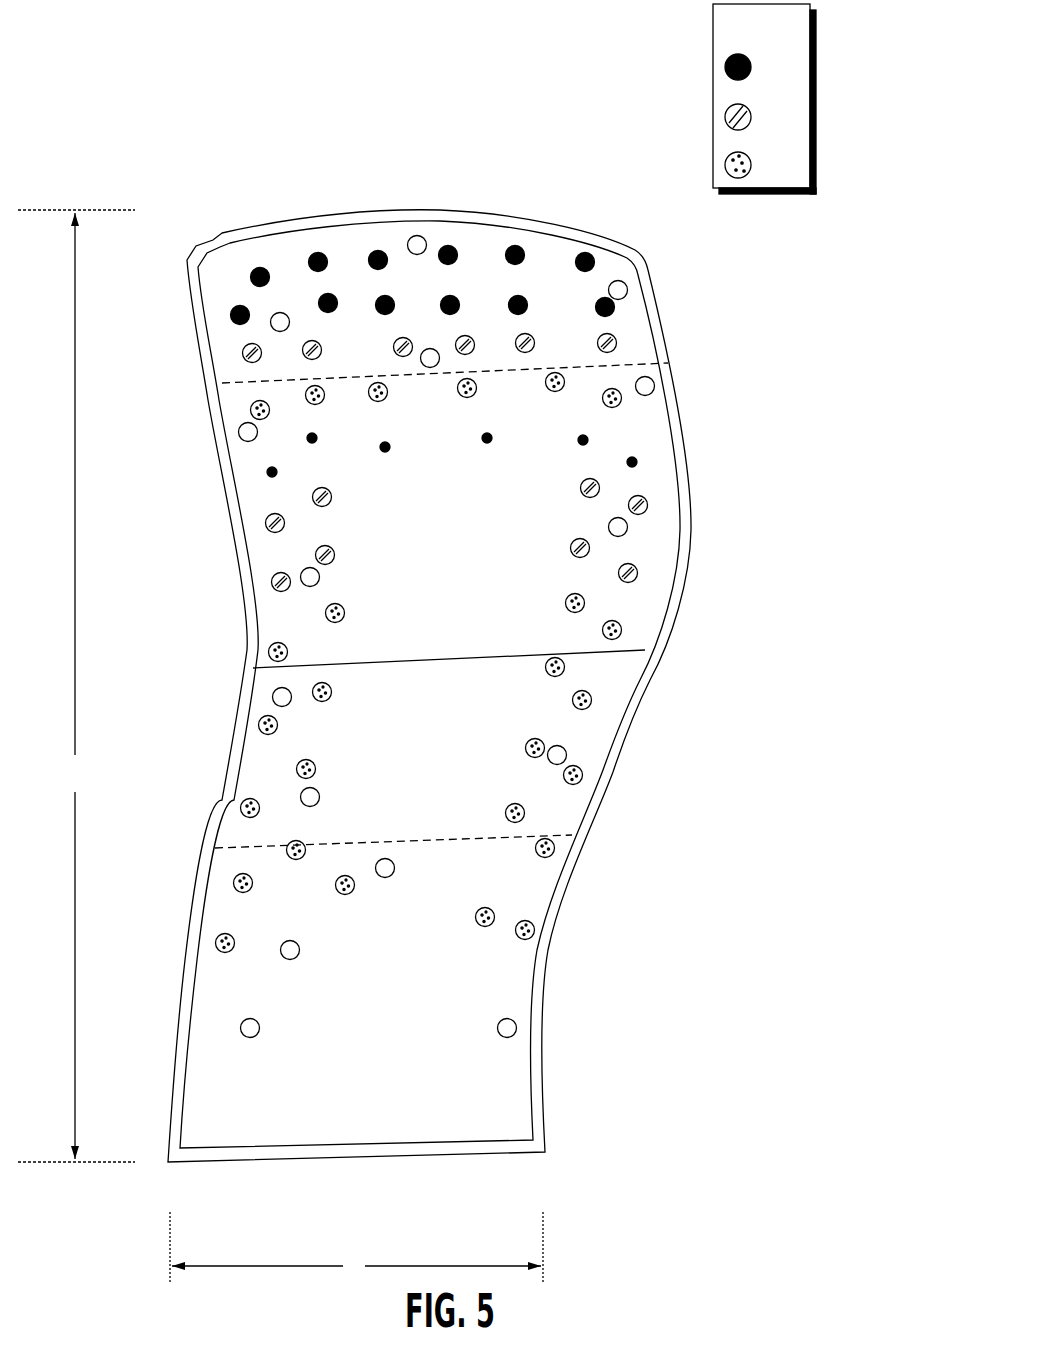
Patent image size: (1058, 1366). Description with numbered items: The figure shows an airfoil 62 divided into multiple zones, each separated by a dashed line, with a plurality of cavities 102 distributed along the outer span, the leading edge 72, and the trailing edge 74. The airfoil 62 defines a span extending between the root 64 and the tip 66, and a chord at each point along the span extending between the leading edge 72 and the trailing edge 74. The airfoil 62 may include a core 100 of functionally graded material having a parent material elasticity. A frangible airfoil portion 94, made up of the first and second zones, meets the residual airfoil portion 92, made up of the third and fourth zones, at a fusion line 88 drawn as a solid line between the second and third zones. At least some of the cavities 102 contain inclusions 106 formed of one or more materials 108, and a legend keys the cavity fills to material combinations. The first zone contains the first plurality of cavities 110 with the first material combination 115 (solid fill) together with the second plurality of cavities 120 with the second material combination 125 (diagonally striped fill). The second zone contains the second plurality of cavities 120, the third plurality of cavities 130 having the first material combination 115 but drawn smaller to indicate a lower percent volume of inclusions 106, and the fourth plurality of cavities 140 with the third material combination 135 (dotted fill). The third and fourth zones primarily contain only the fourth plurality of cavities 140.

The airfoil 62 is at (172, 208).
The root 64 is at (403, 1180).
The tip 66 is at (372, 168).
The leading edge 72 is at (214, 595).
The trailing edge 74 is at (708, 596).
The fusion line 88 is at (585, 663).
The residual airfoil portion 92 is at (434, 767).
The frangible airfoil portion 94 is at (434, 327).
The core 100 is at (330, 1067).
The plurality of cavities 102 is at (580, 147).
The inclusions 106 is at (781, 41).
The one or more materials 108 is at (828, 79).
The first plurality of cavities 110 is at (584, 254).
The first material combination 115 is at (760, 68).
The second plurality of cavities 120 is at (266, 520).
The second material combination 125 is at (760, 117).
The third plurality of cavities 130 is at (637, 462).
The third material combination 135 is at (760, 165).
The fourth plurality of cavities 140 is at (266, 655).